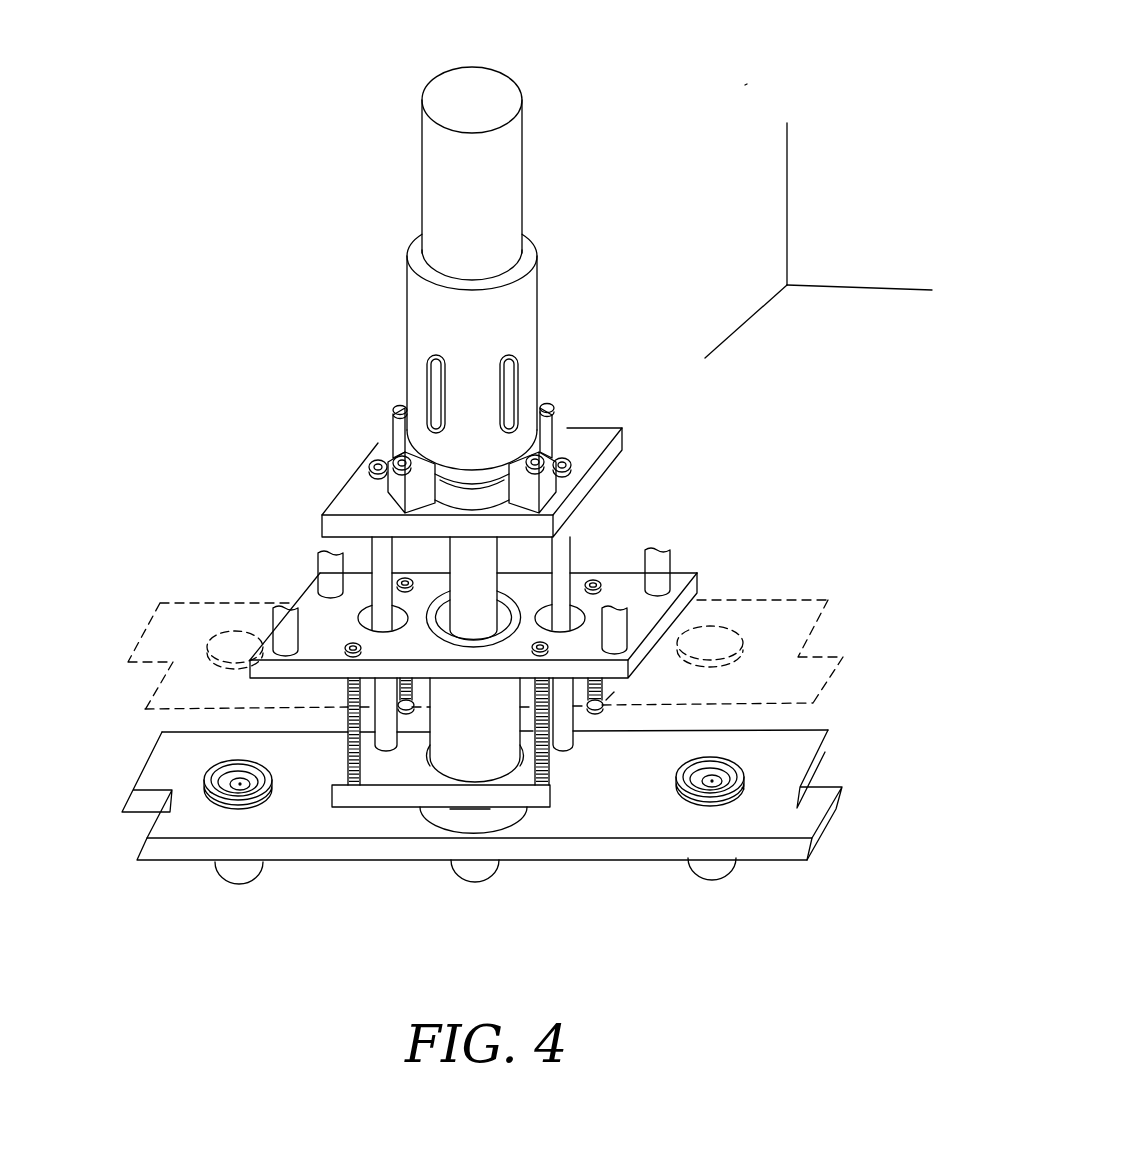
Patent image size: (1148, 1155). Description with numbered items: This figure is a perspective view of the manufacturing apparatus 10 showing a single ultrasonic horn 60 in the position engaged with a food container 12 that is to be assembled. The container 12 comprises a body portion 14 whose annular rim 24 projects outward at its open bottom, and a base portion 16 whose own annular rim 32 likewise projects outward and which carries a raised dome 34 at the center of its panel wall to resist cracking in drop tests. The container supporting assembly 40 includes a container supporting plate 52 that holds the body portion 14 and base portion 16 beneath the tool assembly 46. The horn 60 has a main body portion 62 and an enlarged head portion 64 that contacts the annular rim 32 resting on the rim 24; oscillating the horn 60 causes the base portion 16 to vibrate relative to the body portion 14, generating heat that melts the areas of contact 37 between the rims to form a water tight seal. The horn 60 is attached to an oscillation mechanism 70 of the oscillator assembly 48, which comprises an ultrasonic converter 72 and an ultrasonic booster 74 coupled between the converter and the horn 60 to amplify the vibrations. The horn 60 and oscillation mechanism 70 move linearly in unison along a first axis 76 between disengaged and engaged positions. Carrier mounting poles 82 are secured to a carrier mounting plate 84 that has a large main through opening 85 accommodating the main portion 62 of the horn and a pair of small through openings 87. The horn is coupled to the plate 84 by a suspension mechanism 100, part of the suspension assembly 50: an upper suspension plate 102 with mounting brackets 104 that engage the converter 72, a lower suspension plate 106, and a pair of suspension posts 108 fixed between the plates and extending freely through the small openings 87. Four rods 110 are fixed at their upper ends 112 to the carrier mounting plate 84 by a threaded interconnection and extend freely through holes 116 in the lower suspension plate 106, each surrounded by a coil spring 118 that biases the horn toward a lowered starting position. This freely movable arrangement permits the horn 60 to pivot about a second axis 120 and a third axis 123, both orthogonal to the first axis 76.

The manufacturing apparatus 10 is at (745, 86).
The food container 12 is at (216, 888).
The body portion 14 is at (253, 876).
The base portion 16 is at (748, 640).
The annular rim 24 is at (212, 792).
The annular rim 32 is at (246, 762).
The raised dome 34 is at (238, 786).
The areas of contact 37 is at (270, 788).
The container supporting assembly 40 is at (798, 745).
The tool assembly 46 is at (528, 818).
The oscillator assembly 48 is at (531, 268).
The suspension assembly 50 is at (612, 692).
The container supporting plate 52 is at (748, 636).
The ultrasonic horn 60 is at (498, 729).
The main body portion 62 is at (431, 748).
The enlarged head portion 64 is at (440, 816).
The oscillation mechanism 70 is at (485, 329).
The ultrasonic converter 72 is at (523, 346).
The ultrasonic booster 74 is at (486, 562).
The first axis 76 is at (787, 215).
The carrier mounting pole 82 is at (322, 566).
The carrier mounting plate 84 is at (641, 572).
The large main through opening 85 is at (438, 641).
The small through openings 87 is at (431, 614).
The suspension mechanism 100 is at (614, 467).
The upper suspension plate 102 is at (608, 430).
The mounting brackets 104 is at (393, 430).
The lower suspension plate 106 is at (598, 732).
The suspension posts 108 is at (588, 756).
The suspension rods 110 is at (562, 742).
The upper ends 112 is at (404, 579).
The holes 116 is at (404, 712).
The coil spring 118 is at (345, 716).
The second axis 120 is at (748, 321).
The third axis 123 is at (905, 290).